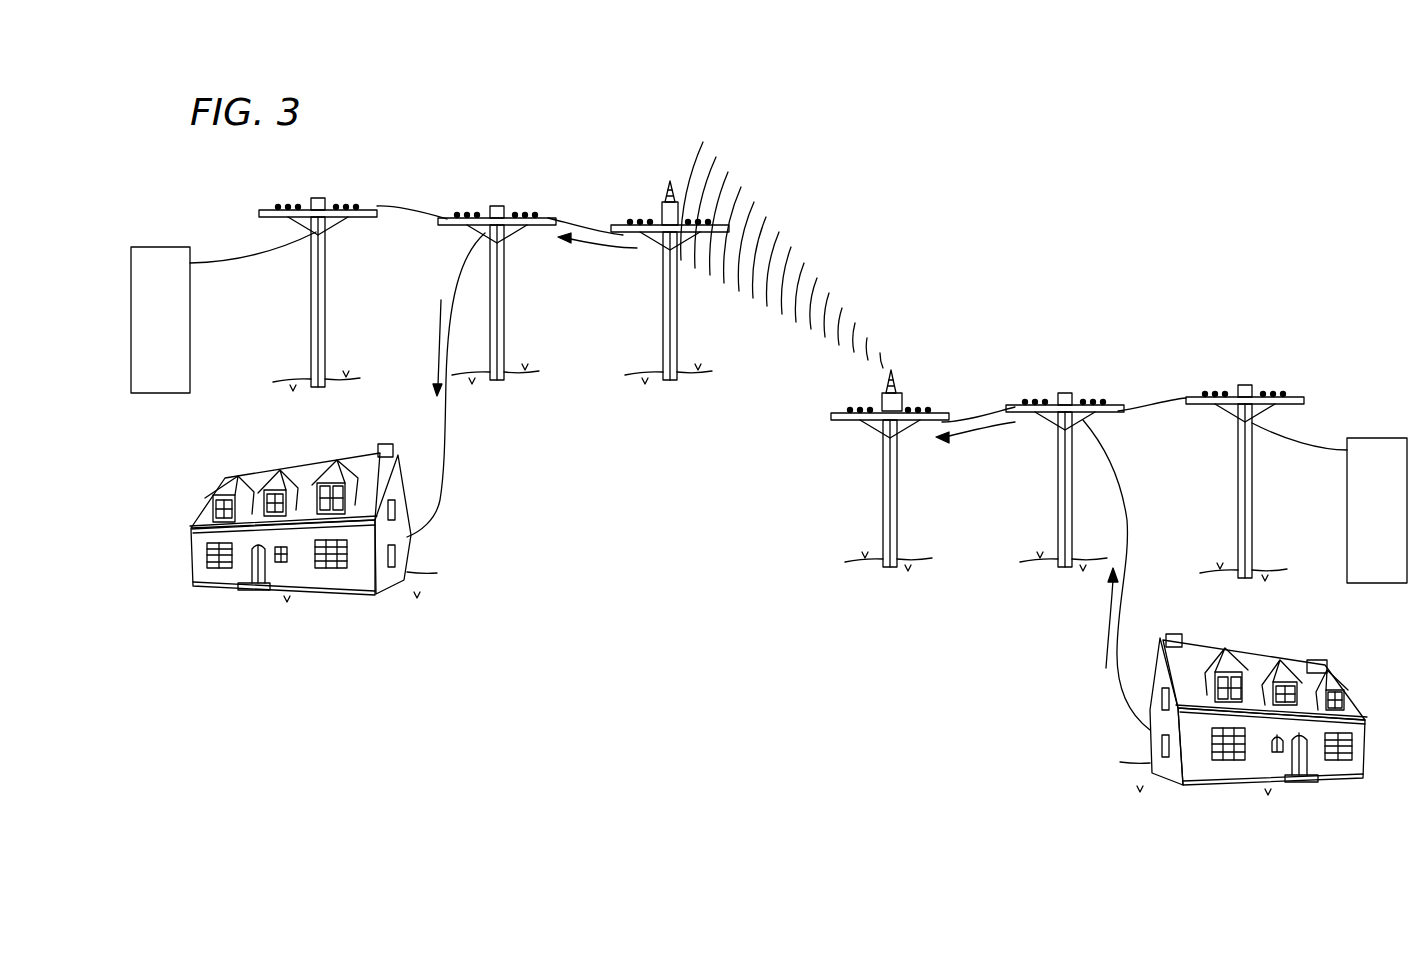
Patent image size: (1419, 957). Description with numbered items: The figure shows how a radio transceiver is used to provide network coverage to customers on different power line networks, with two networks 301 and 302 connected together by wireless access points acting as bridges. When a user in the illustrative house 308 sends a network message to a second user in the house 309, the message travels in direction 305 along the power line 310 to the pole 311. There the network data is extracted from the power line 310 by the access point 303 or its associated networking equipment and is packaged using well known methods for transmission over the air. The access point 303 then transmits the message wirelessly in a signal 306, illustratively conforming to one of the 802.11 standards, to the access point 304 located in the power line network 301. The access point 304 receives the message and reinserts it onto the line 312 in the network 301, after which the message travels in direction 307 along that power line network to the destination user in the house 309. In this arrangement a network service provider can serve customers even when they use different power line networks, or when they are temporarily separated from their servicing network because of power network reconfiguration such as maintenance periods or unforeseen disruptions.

The power line network 301 is at (439, 186).
The network 302 is at (1108, 368).
The access point 303 is at (895, 369).
The access point 304 is at (670, 180).
The direction 305 is at (982, 433).
The signal 306 is at (1375, 437).
The direction 307 is at (437, 342).
The house 308 is at (1210, 776).
The house 309 is at (305, 582).
The power line 310 is at (983, 413).
The pole 311 is at (887, 506).
The line 312 is at (583, 228).